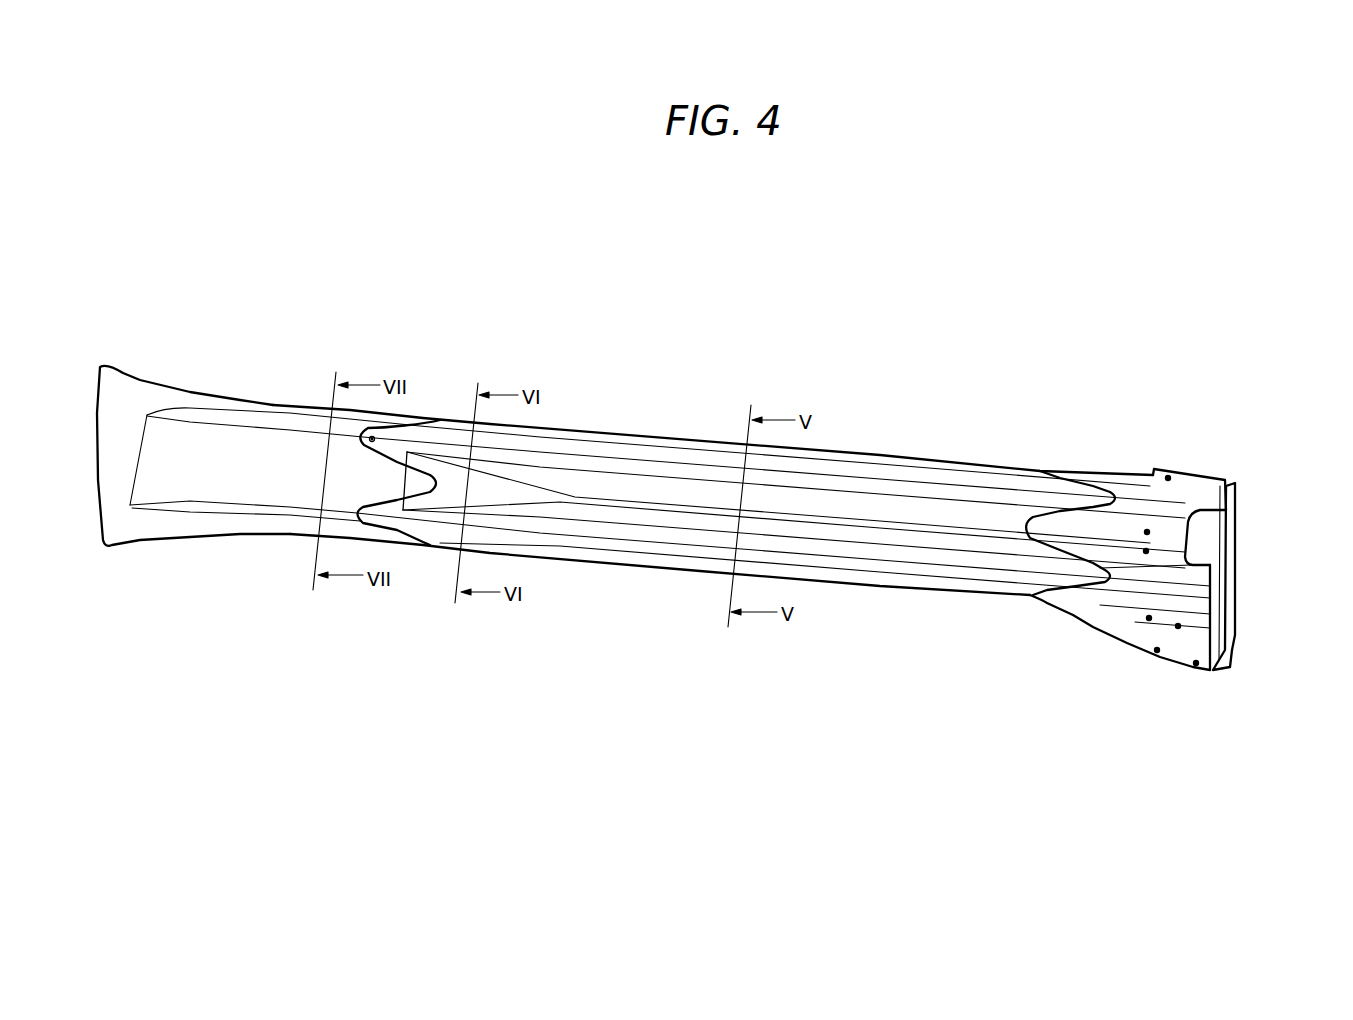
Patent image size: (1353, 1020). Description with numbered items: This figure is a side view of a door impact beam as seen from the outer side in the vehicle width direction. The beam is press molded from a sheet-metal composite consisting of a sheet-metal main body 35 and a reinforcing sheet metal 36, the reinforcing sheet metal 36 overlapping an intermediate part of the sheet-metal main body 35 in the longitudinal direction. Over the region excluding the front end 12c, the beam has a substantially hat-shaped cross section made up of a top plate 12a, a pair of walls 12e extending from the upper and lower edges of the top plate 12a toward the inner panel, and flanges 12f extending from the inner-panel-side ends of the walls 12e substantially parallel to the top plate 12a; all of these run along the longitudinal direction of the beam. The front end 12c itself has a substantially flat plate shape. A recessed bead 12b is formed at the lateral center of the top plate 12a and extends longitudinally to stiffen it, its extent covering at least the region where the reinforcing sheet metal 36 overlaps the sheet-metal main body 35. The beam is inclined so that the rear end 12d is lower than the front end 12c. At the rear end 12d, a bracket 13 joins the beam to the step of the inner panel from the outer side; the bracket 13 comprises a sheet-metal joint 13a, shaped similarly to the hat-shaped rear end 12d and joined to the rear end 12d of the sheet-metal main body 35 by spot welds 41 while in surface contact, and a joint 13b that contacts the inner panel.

The top plate 12a is at (887, 488).
The recessed bead 12b is at (963, 512).
The front end 12c is at (113, 403).
The rear end 12d is at (1138, 578).
The walls 12e is at (832, 466).
The flanges 12f is at (668, 437).
The bracket 13 is at (1007, 490).
The sheet-metal joint 13a is at (1210, 527).
The joint 13b is at (1232, 590).
The sheet-metal main body 35 is at (277, 405).
The reinforcing sheet metal 36 is at (623, 432).
The spot welds 41 is at (1148, 549).